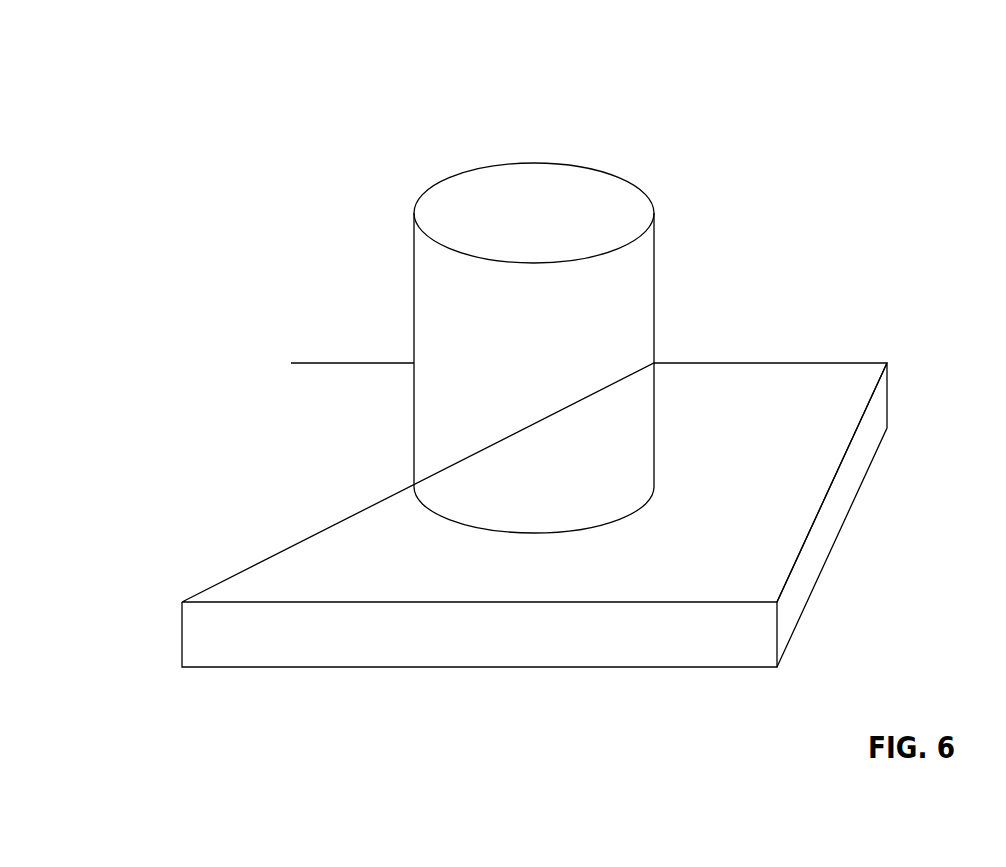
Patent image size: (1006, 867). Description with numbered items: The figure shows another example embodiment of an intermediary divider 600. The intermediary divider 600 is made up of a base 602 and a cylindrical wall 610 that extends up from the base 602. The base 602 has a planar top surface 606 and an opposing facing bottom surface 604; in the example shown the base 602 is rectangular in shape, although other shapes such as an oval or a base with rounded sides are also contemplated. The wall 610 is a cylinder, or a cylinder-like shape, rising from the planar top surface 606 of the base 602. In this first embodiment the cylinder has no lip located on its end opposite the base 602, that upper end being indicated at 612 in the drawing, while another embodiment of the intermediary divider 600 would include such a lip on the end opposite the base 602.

The intermediary divider 600 is at (281, 97).
The base 602 is at (793, 383).
The bottom surface 604 is at (266, 678).
The planar top surface 606 is at (775, 522).
The cylindrical wall 610 is at (455, 313).
The top surface of cylindrical body 612 is at (585, 183).